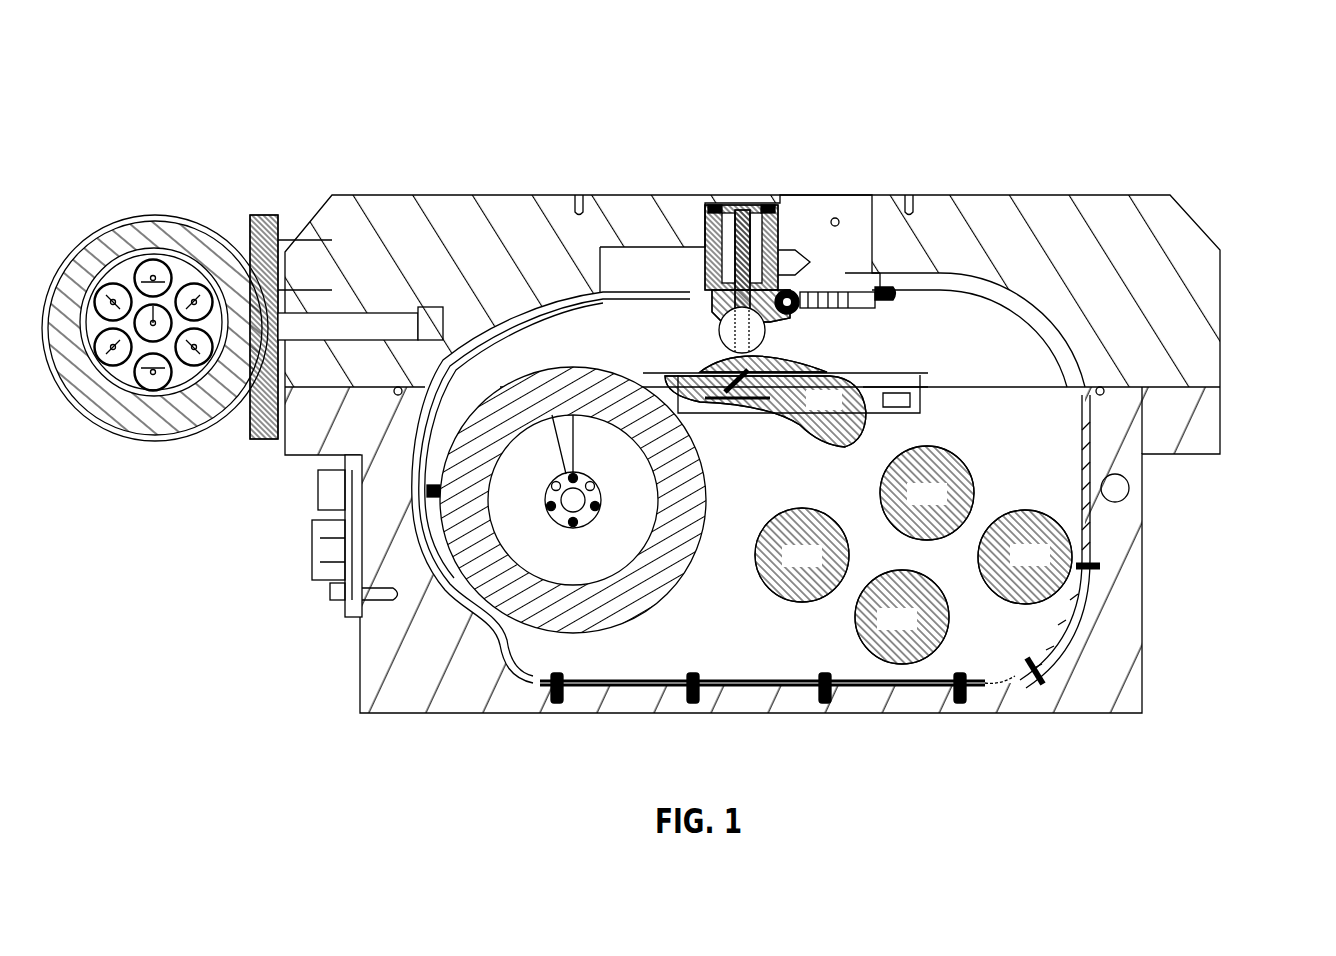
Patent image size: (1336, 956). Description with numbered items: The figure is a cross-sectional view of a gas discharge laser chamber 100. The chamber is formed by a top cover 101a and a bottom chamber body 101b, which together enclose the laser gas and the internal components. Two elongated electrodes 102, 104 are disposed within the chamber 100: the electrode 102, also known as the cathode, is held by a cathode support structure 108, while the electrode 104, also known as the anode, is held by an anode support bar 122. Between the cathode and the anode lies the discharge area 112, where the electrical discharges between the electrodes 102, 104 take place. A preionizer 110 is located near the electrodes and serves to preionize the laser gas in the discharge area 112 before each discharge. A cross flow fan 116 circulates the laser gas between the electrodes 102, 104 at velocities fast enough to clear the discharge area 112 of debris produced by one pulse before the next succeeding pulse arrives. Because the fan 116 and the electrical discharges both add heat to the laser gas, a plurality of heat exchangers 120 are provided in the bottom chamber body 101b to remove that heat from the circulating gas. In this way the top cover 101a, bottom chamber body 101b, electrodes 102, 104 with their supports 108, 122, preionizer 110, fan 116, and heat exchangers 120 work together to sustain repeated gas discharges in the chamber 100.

The gas discharge laser chamber 100 is at (370, 88).
The top cover 101a is at (1221, 347).
The bottom chamber body 101b is at (1143, 572).
The electrode (cathode) 102 is at (708, 268).
The electrode (anode) 104 is at (733, 367).
The cathode support structure 108 is at (770, 290).
The preionizer 110 is at (792, 298).
The discharge area 112 is at (758, 337).
The cross flow fan 116 is at (568, 568).
The heat exchangers 120 is at (786, 567).
The anode support bar 122 is at (806, 411).